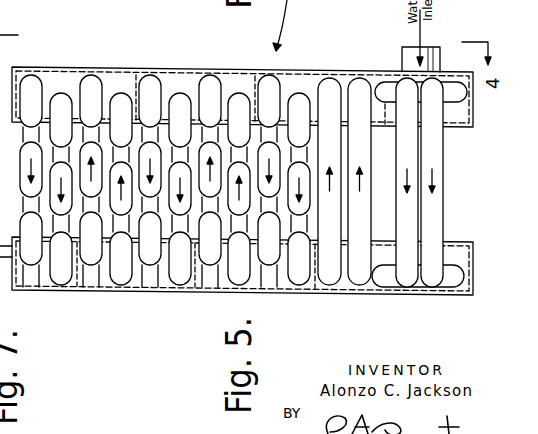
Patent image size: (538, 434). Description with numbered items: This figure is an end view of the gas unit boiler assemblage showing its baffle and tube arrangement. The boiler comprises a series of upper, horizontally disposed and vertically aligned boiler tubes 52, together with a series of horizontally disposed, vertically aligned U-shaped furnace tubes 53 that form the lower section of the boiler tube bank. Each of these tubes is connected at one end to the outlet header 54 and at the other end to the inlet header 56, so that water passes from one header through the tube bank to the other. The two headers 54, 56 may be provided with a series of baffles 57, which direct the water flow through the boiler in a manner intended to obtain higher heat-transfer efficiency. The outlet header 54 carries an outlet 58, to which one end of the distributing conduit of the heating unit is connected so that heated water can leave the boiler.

The boiler tubes 52 is at (160, 290).
The U-shaped furnace tubes 53 is at (422, 205).
The outlet header 54 is at (36, 291).
The inlet header 56 is at (169, 68).
The baffles 57 is at (134, 76).
The outlet 58 is at (0, 236).